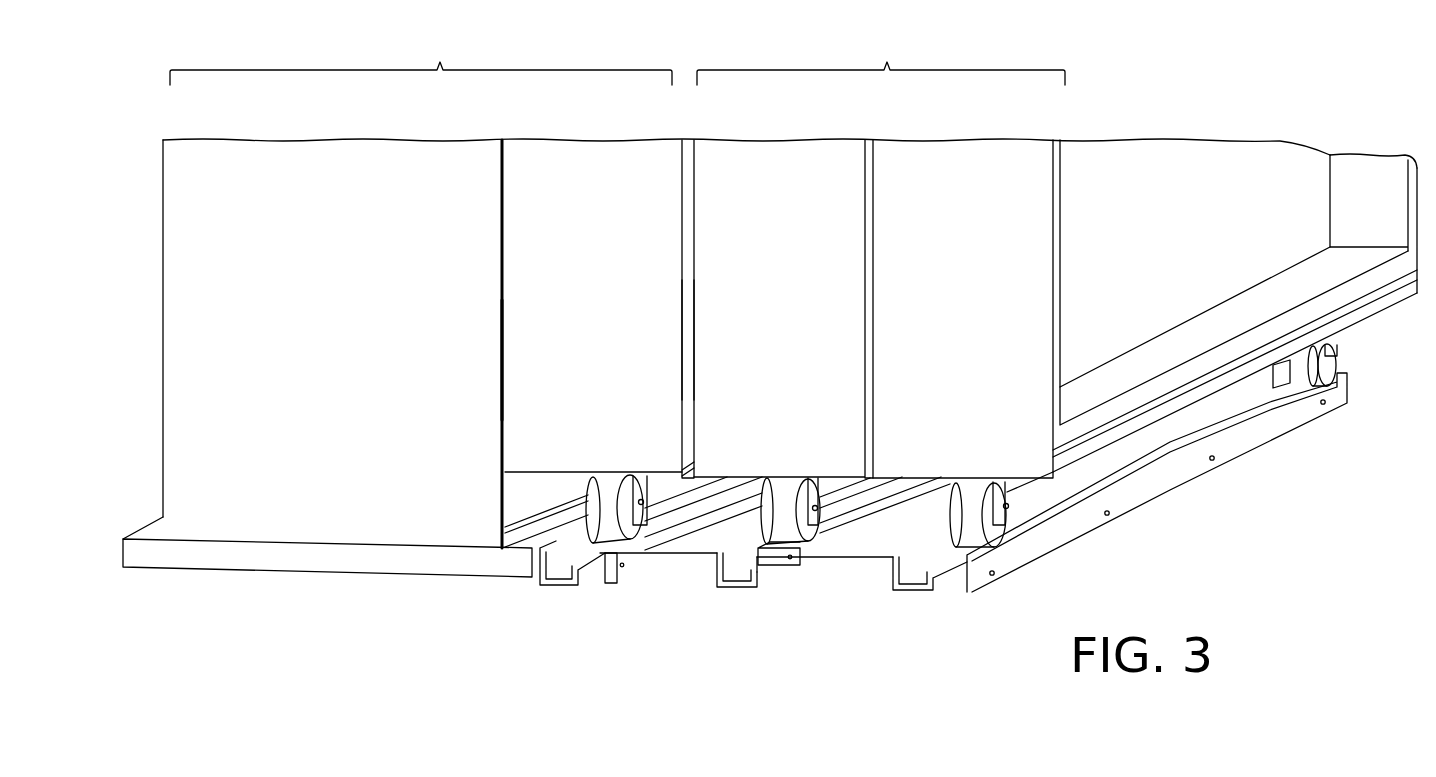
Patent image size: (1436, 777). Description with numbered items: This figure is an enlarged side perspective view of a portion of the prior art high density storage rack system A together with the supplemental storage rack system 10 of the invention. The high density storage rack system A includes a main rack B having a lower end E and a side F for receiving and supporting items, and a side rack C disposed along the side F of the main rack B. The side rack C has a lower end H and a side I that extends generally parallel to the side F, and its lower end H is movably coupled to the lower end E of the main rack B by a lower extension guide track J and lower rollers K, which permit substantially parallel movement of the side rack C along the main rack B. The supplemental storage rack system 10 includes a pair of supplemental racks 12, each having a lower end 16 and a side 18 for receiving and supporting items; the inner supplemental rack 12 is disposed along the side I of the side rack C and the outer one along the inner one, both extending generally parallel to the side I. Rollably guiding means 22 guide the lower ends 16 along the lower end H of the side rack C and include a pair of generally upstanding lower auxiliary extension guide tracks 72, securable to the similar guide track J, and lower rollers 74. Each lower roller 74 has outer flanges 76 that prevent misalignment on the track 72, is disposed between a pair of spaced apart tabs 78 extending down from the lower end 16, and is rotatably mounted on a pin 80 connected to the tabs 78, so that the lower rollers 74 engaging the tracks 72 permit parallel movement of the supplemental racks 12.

The high density storage rack system A is at (440, 54).
The main rack B is at (364, 176).
The side rack C is at (578, 175).
The lower end of the main rack E is at (347, 565).
The side of the main rack F is at (503, 355).
The lower end of the side rack H is at (540, 465).
The side of the side rack I is at (687, 322).
The lower extension guide track J is at (556, 585).
The lower rollers K is at (604, 525).
The supplemental storage rack system 10 is at (900, 50).
The supplemental racks 12 is at (892, 142).
The lower ends of the supplemental racks 16 is at (848, 470).
The side of the supplemental rack 18 is at (872, 312).
The rollably guiding means 22 is at (858, 582).
The lower auxiliary extension guide tracks 72 is at (728, 588).
The lower rollers 74 is at (808, 535).
The outer flanges 76 is at (762, 503).
The spaced apart tabs 78 is at (815, 485).
The pin 80 is at (820, 517).